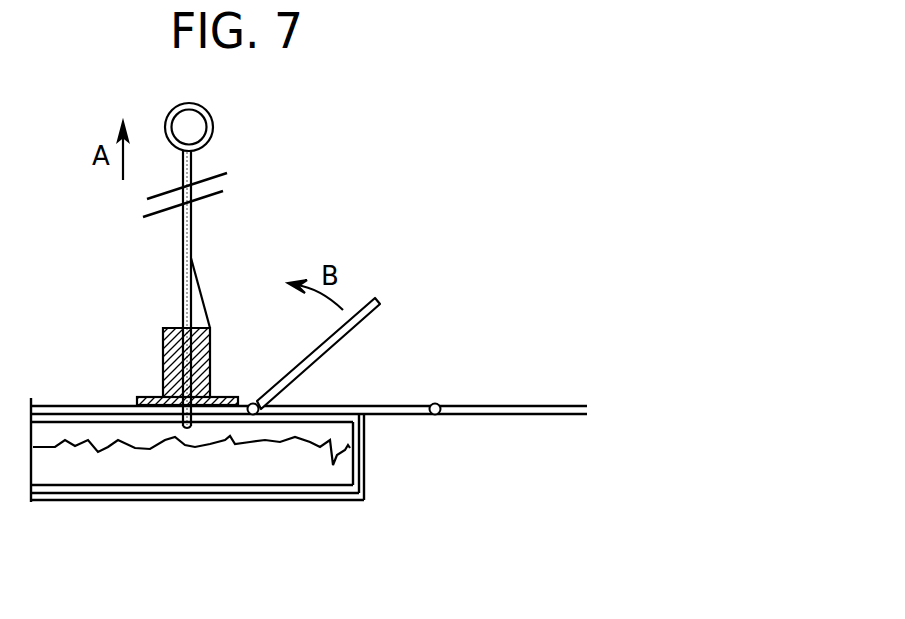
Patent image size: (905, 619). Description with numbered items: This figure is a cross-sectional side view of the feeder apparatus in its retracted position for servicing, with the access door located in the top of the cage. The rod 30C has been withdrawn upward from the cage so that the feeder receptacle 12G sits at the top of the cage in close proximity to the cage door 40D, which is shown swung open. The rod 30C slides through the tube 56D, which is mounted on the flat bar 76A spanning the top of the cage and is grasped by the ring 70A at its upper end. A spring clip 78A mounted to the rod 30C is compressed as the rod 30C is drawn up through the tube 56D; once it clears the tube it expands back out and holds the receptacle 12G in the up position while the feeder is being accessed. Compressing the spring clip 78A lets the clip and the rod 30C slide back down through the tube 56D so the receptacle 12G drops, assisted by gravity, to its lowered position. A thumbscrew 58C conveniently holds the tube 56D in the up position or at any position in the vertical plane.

The ring handle 70A is at (212, 133).
The rod 30C is at (183, 238).
The spring clip 78A is at (197, 280).
The tube 56D is at (212, 353).
The thumbscrew 58C is at (88, 323).
The base flange 76A is at (140, 398).
The cage door 40D is at (423, 352).
The feeder receptacle 12G is at (292, 501).